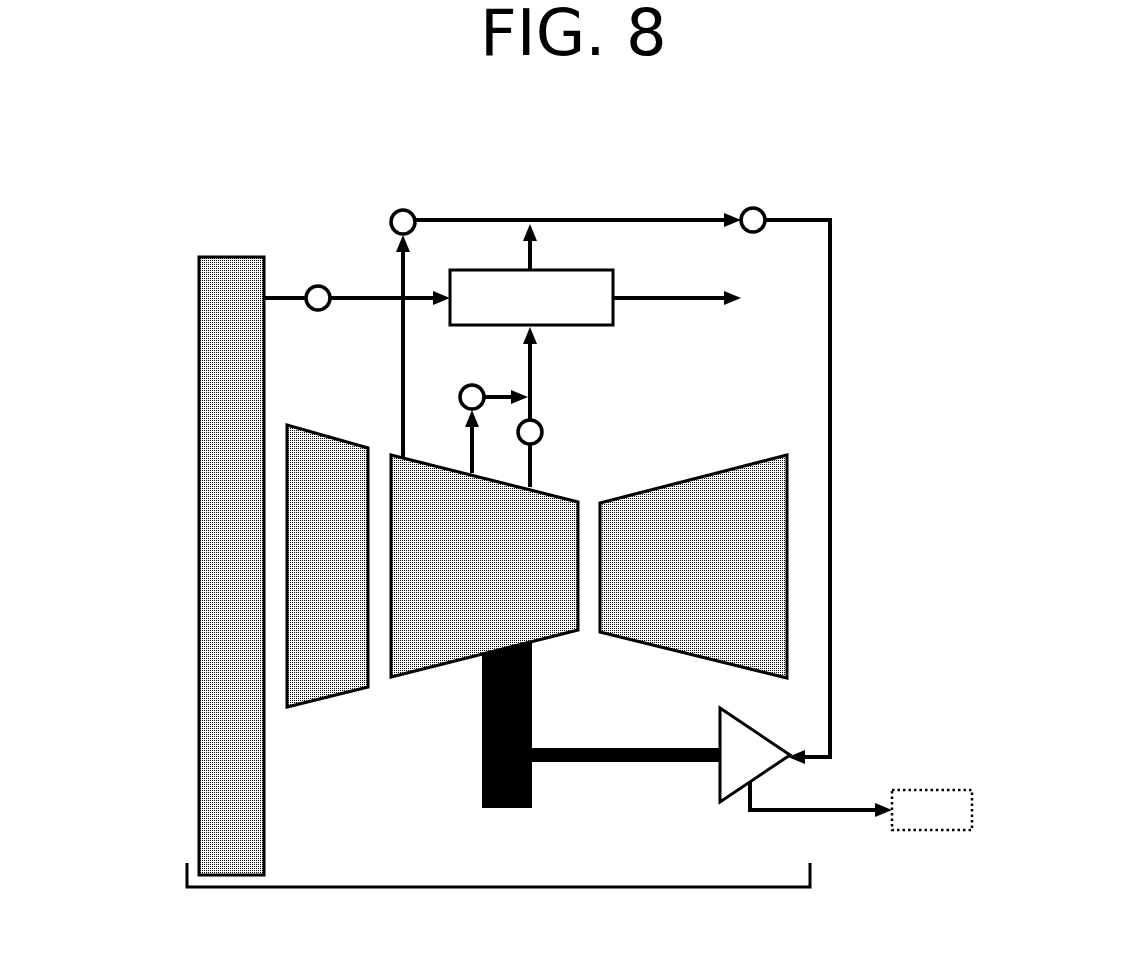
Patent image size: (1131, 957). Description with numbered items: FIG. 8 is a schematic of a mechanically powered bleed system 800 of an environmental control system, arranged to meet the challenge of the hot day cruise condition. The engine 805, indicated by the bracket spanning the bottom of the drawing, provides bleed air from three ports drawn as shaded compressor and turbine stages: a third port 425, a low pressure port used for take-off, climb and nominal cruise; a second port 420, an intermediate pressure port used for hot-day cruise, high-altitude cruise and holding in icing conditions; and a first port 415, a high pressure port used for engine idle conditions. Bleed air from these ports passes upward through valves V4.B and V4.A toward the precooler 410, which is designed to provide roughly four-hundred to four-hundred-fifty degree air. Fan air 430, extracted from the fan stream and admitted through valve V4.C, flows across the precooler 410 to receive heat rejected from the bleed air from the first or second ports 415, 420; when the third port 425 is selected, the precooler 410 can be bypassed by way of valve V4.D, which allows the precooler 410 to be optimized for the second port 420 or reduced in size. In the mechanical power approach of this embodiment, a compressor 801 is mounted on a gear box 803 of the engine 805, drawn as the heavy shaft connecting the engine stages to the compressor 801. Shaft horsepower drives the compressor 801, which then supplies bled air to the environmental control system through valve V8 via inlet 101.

The bleed system 800 is at (1118, 87).
The fan air 430 is at (268, 288).
The valve V4.C is at (323, 310).
The valve V4.D is at (394, 213).
The valve V8 is at (745, 211).
The precooler 410 is at (550, 312).
The valve V4.A is at (542, 427).
The valve V4.B is at (463, 388).
The third port 425 is at (385, 459).
The second port 420 is at (462, 463).
The first port 415 is at (541, 488).
The gear box 803 is at (559, 731).
The compressor 801 is at (761, 771).
The inlet 101 is at (932, 810).
The engine 805 is at (805, 887).